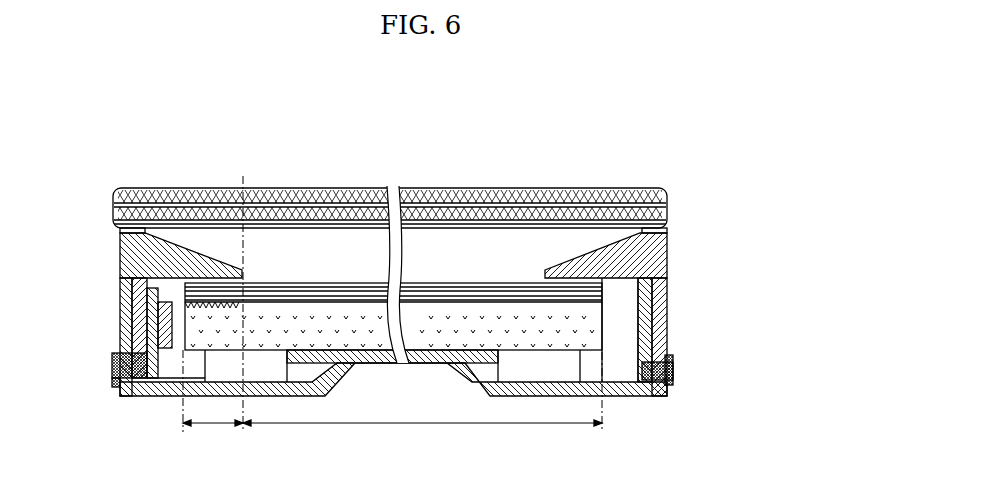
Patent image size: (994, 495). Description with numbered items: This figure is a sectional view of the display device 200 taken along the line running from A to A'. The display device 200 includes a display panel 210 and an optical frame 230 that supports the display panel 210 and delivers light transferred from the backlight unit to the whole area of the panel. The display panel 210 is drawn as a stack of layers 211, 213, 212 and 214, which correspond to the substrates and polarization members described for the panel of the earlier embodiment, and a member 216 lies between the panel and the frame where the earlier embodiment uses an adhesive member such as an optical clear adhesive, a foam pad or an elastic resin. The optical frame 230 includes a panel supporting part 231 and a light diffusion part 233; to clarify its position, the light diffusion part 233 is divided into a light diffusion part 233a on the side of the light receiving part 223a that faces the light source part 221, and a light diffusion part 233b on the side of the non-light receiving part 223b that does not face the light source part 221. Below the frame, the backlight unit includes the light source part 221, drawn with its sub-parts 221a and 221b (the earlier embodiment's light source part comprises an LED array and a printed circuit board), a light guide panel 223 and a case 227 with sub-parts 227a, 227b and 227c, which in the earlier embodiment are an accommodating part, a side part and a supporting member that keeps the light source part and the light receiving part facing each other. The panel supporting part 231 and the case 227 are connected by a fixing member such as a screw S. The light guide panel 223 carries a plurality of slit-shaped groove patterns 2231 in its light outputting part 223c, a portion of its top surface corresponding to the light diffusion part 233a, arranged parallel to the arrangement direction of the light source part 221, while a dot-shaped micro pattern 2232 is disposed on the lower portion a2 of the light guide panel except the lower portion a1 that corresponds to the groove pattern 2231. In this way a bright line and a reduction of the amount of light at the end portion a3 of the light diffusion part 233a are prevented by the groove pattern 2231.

The display device 200 is at (160, 113).
The display panel 210 is at (570, 142).
The first substrate 211 is at (470, 192).
The adhesive layer 213 is at (499, 203).
The second substrate 212 is at (528, 209).
The polarizing layer 214 is at (563, 220).
The adhesive member 216 is at (667, 230).
The optical frame 230 is at (722, 250).
The light diffusion part 233 is at (668, 263).
The light diffusion part 233a is at (203, 250).
The light diffusion part 233b is at (599, 250).
The panel supporting part 231 is at (658, 308).
The light guide panel 223 is at (283, 326).
The light receiving part 223a is at (151, 322).
The non-light receiving part 223b is at (650, 336).
The light outputting part 223c is at (321, 297).
The groove pattern 2231 is at (139, 292).
The micro pattern 2232 is at (512, 352).
The light source part 221 is at (180, 464).
The light source 221a is at (170, 353).
The circuit board 221b is at (149, 381).
The case 227 is at (690, 467).
The bottom portion 227a is at (613, 388).
The lower surface portion 227b is at (647, 396).
The step portion 227c is at (557, 384).
The screw S is at (675, 370).
The lower portion a1 is at (213, 399).
The lower portion a2 is at (422, 400).
The end portion a3 is at (248, 295).
The section line end A is at (108, 406).
The section line end A' is at (678, 408).